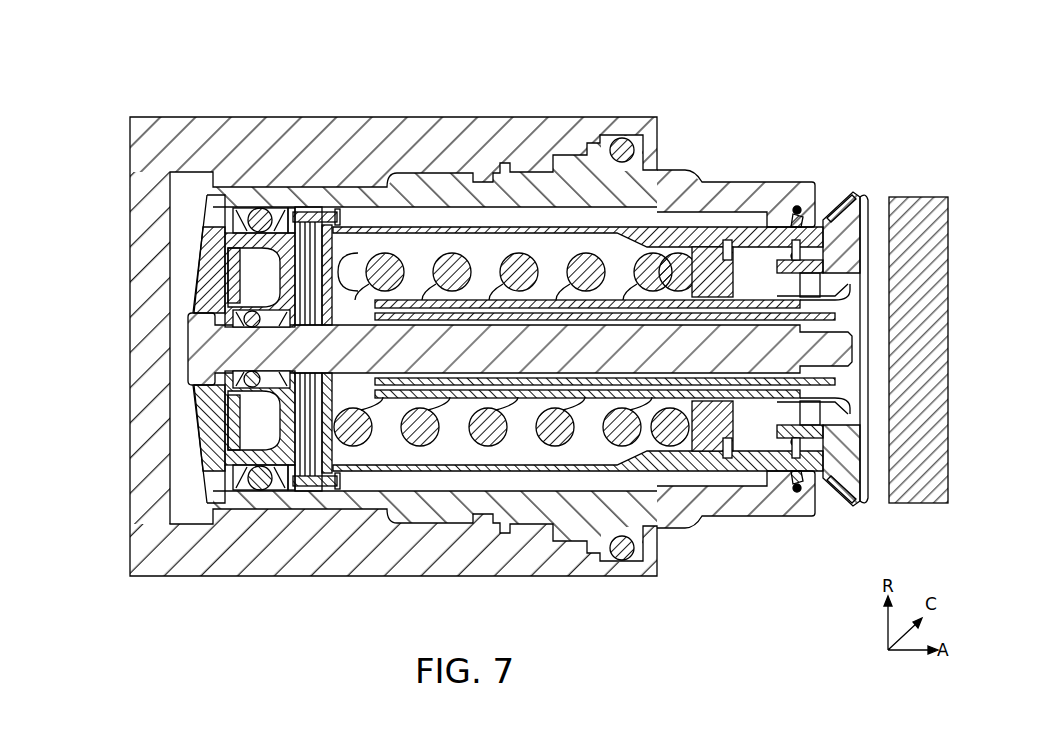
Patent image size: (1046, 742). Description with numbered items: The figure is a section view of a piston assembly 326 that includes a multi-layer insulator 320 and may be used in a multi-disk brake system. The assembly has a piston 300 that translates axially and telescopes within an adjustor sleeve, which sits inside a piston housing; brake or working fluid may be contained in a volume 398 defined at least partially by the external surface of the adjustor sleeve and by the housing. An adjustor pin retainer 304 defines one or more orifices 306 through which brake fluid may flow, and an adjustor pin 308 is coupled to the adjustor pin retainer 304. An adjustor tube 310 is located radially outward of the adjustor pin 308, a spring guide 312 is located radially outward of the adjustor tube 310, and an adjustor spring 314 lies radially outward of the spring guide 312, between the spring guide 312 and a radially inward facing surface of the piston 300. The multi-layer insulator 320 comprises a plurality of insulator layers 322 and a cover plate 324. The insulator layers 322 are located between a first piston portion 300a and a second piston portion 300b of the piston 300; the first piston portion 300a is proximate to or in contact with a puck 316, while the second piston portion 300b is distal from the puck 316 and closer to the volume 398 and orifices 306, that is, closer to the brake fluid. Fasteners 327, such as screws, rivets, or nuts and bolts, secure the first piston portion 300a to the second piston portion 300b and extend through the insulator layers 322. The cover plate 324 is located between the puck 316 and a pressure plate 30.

The piston assembly 326 is at (502, 346).
The volume 398 is at (186, 166).
The piston 300 is at (637, 218).
The first piston portion 300a is at (683, 238).
The second piston portion 300b is at (275, 245).
The adjustor pin retainer 304 is at (205, 402).
The orifices 306 is at (202, 216).
The adjustor pin 308 is at (205, 343).
The adjustor tube 310 is at (748, 378).
The spring guide 312 is at (707, 430).
The adjustor spring 314 is at (668, 432).
The puck 316 is at (840, 495).
The multi-layer insulator 320 is at (299, 198).
The insulator layers 322 is at (316, 205).
The cover plate 324 is at (858, 194).
The fasteners 327 is at (318, 225).
The pressure plate 30 is at (925, 212).